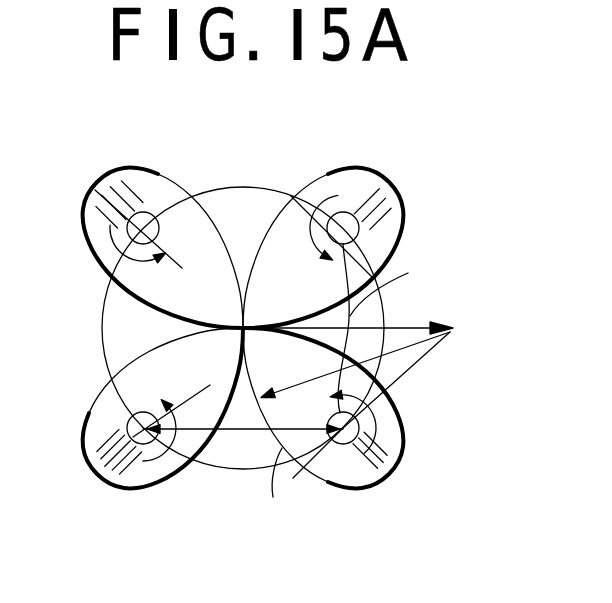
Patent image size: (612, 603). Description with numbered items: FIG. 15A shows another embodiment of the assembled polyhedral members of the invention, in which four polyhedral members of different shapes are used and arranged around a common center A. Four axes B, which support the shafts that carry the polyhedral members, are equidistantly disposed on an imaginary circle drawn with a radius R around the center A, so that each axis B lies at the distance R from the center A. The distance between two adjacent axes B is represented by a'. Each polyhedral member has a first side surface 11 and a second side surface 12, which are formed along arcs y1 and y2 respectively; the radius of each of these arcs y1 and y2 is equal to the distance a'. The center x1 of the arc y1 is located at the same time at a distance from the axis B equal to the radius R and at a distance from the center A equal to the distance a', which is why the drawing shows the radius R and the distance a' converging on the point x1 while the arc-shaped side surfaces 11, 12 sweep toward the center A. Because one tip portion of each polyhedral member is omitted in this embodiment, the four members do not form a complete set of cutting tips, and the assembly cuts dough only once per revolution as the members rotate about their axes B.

The first side surface 11 is at (310, 425).
The second side surface 12 is at (323, 342).
The center A is at (238, 332).
The axis B is at (340, 456).
The radius R is at (408, 371).
The center of the arc y1 x1 is at (365, 329).
The arc y1 is at (263, 487).
The arc y2 is at (389, 328).
The distance between two adjacent axes a' is at (296, 377).